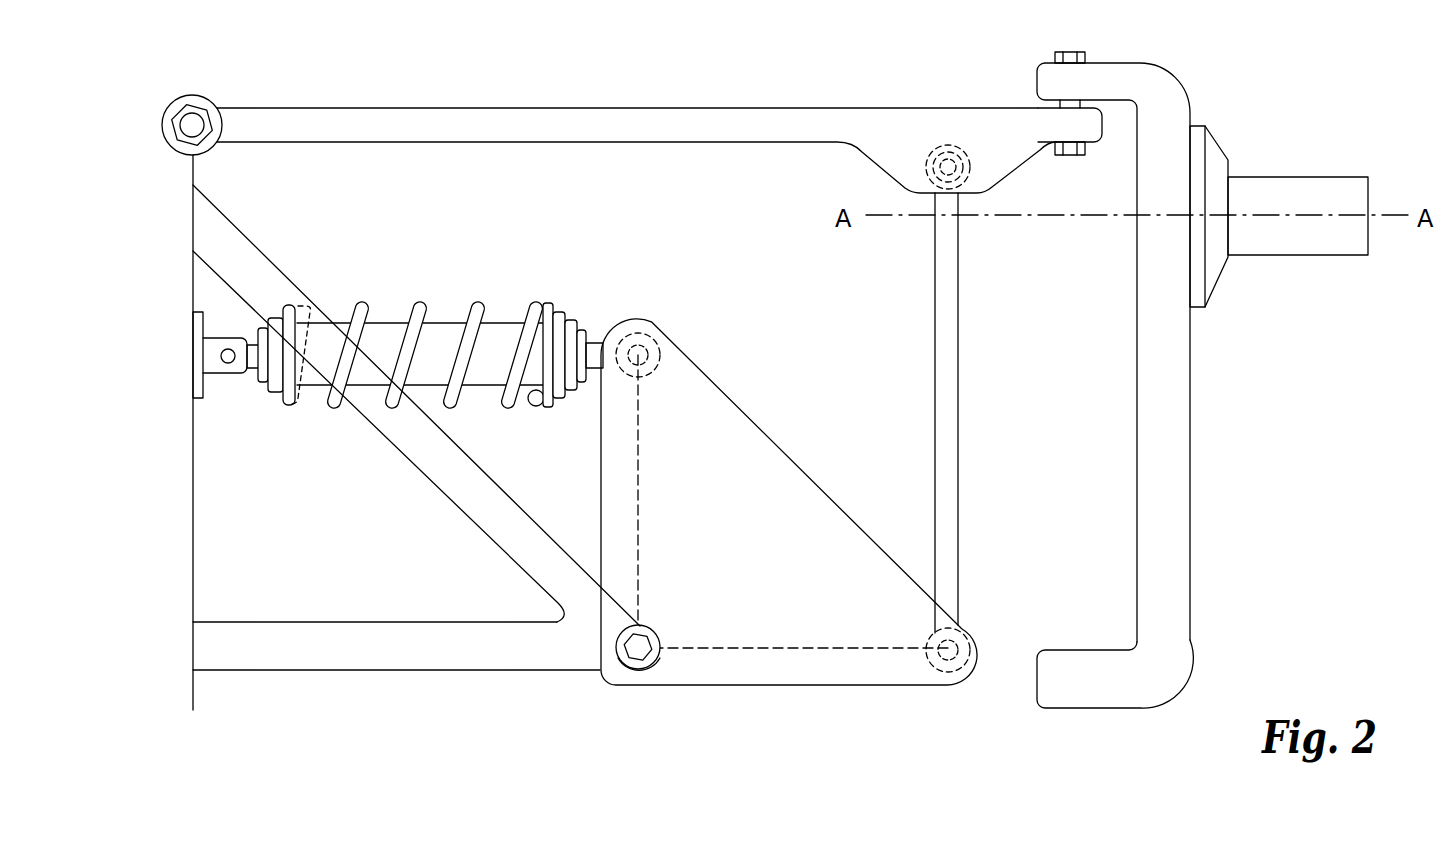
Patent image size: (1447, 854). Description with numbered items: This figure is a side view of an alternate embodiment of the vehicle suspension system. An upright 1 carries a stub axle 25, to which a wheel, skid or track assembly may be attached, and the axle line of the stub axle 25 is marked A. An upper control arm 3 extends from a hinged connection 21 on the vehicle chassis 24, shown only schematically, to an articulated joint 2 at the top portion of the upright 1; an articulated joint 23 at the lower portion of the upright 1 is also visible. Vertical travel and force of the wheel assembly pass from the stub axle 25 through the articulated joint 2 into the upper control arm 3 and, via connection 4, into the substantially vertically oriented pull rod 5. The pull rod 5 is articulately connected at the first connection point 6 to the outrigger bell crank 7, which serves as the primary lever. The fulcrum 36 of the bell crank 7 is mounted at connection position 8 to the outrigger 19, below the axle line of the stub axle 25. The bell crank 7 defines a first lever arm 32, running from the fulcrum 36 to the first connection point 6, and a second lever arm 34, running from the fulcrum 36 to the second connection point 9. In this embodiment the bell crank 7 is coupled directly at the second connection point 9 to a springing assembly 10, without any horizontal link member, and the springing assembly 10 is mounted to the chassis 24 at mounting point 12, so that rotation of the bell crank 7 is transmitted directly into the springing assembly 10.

The upright 1 is at (1193, 118).
The articulated joint 2 is at (1094, 147).
The upper control arm 3 is at (592, 108).
The connection 4 is at (947, 148).
The pull rod 5 is at (962, 430).
The first connection point 6 is at (928, 677).
The outrigger bell crank 7 is at (762, 636).
The connection position 8 is at (645, 626).
The second connection point 9 is at (658, 331).
The springing assembly 10 is at (509, 320).
The mounting point 12 is at (191, 314).
The outrigger 19 is at (376, 674).
The hinged connection 21 is at (217, 149).
The articulated joint 23 is at (1090, 714).
The vehicle chassis 24 is at (190, 556).
The stub axle 25 is at (1298, 242).
The first lever arm 32 is at (838, 652).
The second lever arm 34 is at (640, 482).
The fulcrum 36 is at (645, 668).